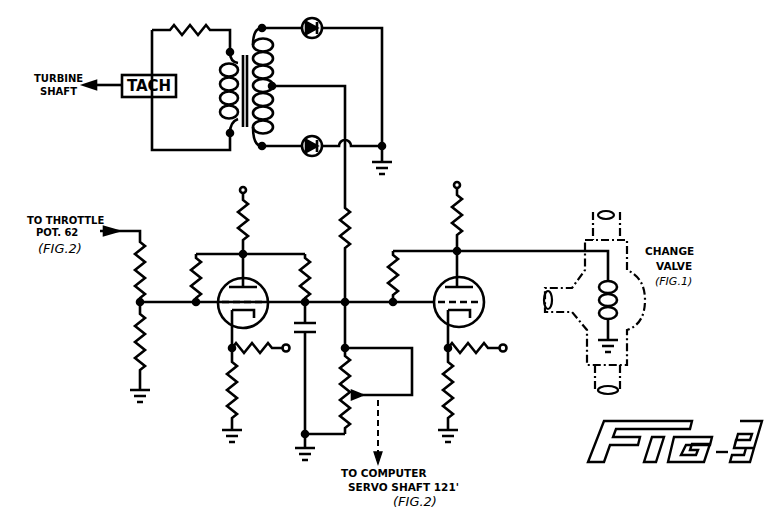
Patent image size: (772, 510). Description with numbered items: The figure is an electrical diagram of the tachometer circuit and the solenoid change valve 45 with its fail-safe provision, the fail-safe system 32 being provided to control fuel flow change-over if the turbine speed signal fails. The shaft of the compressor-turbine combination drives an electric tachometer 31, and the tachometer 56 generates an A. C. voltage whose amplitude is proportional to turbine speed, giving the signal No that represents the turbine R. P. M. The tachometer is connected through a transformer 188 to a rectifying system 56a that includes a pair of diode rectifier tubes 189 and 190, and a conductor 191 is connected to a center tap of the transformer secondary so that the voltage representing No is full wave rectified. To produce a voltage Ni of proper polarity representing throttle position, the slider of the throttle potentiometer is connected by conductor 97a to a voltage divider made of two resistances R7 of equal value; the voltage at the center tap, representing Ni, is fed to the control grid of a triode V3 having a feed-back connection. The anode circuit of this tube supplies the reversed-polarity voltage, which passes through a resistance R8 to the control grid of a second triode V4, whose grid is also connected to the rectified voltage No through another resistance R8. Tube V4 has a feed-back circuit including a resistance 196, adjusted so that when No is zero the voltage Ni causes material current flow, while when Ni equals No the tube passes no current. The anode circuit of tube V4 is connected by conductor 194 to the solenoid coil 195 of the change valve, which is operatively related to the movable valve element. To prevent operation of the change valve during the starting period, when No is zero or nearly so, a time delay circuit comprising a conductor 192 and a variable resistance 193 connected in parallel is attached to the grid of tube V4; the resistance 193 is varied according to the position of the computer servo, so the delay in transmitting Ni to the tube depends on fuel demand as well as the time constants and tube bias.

The electric tachometer 31 is at (135, 66).
The tachometer 56 is at (146, 98).
The transformer 188 is at (240, 46).
The diode rectifier tube 189 is at (323, 24).
The diode rectifier tube 190 is at (317, 136).
The conductor 191 is at (274, 86).
The rectifying system 56a is at (356, 71).
The tachometer voltage No is at (343, 193).
The resistance R8 is at (350, 230).
The conductor 97a is at (135, 230).
The fail-safe system 32 is at (211, 240).
The throttle position voltage Ni is at (252, 254).
The resistance R7 is at (130, 270).
The triode V3 is at (226, 316).
The conductor 192 is at (304, 386).
The variable resistance 193 is at (352, 386).
The conductor 194 is at (492, 251).
The solenoid coil 195 is at (598, 283).
The feed-back resistance 196 is at (398, 278).
The triode V4 is at (479, 288).
The change valve 45 is at (648, 307).